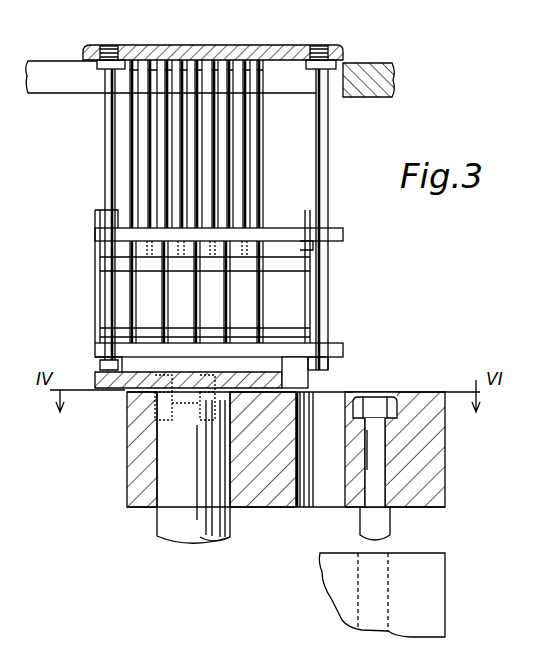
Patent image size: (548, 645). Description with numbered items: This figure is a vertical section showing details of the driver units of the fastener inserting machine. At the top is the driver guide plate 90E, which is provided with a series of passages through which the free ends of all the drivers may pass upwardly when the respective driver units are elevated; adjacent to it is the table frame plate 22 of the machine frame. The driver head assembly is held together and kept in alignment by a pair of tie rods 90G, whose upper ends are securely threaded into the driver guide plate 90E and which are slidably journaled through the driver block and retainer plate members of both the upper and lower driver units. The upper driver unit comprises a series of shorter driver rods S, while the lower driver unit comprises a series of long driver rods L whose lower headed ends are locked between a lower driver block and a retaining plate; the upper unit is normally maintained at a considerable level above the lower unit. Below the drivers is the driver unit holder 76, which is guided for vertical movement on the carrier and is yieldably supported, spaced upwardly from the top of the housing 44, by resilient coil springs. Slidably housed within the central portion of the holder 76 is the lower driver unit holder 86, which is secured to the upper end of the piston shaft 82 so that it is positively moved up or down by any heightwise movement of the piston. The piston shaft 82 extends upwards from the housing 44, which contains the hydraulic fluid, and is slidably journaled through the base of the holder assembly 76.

The driver guide plate 90E is at (305, 45).
The table frame plate 22 is at (370, 63).
The tie rods 90G is at (105, 164).
The driver rods S is at (148, 127).
The driver rods L is at (275, 143).
The driver unit holder 76 is at (312, 281).
The lower driver unit holder 86 is at (283, 328).
The piston shaft 82 is at (156, 523).
The housing 44 is at (445, 575).